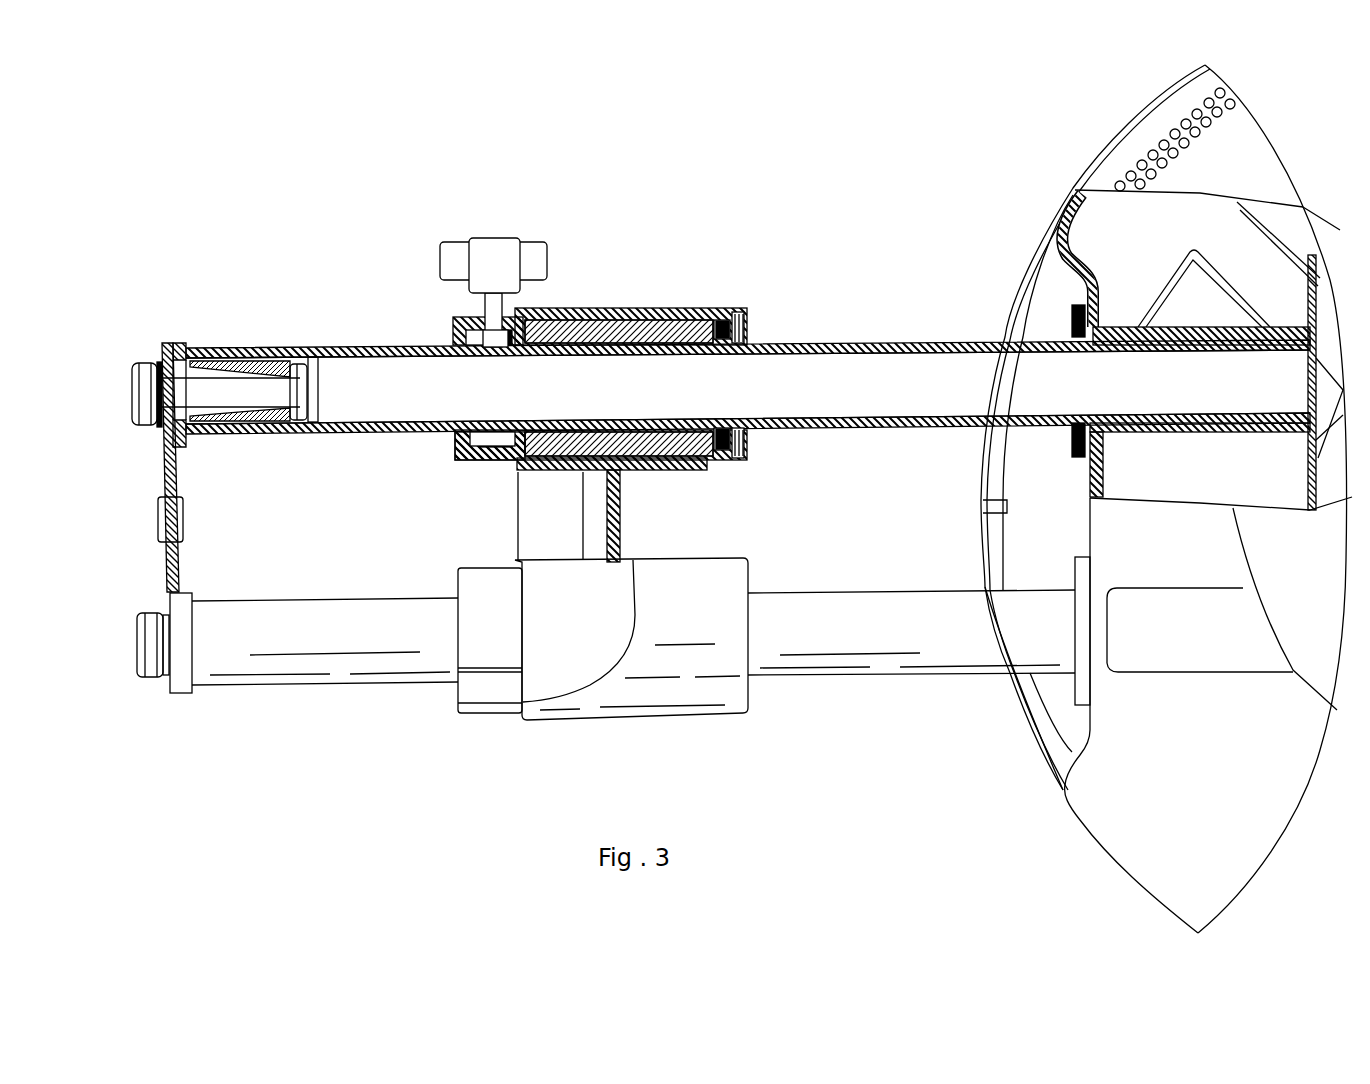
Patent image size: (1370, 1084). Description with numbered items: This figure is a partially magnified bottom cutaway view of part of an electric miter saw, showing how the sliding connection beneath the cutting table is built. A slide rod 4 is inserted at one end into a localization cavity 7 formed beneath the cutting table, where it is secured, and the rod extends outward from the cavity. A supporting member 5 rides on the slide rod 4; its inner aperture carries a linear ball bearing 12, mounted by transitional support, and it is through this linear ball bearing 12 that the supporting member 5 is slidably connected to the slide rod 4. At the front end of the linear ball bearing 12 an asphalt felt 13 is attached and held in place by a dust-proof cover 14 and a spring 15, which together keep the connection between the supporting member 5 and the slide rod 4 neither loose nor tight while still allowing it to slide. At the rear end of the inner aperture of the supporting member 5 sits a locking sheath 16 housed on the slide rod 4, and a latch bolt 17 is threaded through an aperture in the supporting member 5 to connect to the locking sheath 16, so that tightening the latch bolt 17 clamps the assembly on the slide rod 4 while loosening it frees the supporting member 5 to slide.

The slide rod 4 is at (846, 348).
The supporting member 5 is at (630, 310).
The localization cavity 7 is at (934, 372).
The linear ball bearing 12 is at (580, 316).
The asphalt felt 13 is at (718, 316).
The dust-proof cover 14 is at (734, 462).
The spring 15 is at (746, 314).
The locking sheath 16 is at (463, 320).
The latch bolt 17 is at (496, 300).